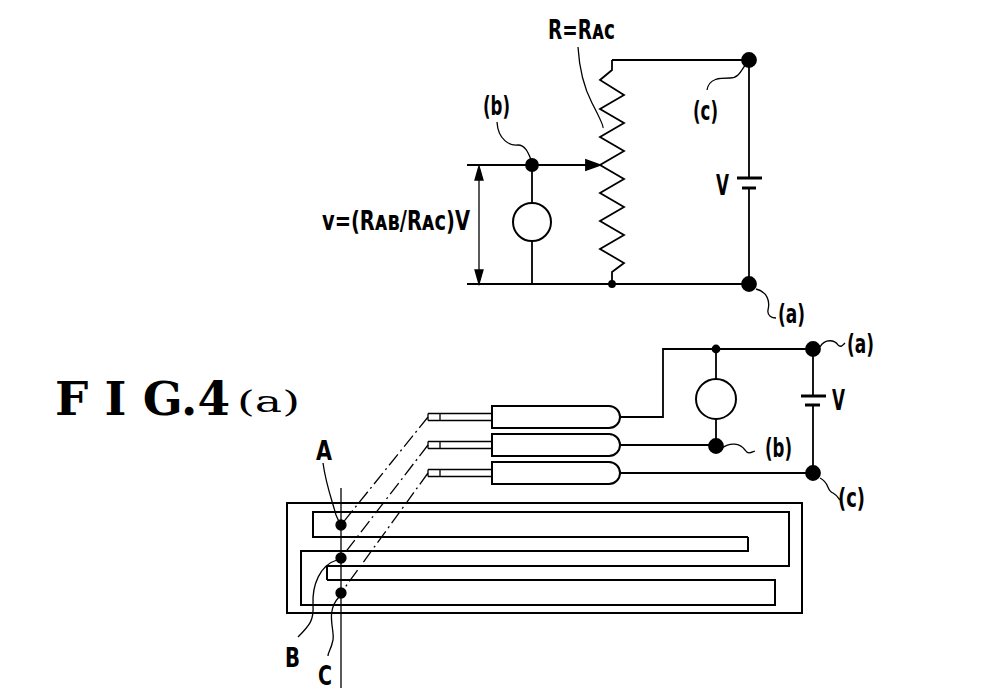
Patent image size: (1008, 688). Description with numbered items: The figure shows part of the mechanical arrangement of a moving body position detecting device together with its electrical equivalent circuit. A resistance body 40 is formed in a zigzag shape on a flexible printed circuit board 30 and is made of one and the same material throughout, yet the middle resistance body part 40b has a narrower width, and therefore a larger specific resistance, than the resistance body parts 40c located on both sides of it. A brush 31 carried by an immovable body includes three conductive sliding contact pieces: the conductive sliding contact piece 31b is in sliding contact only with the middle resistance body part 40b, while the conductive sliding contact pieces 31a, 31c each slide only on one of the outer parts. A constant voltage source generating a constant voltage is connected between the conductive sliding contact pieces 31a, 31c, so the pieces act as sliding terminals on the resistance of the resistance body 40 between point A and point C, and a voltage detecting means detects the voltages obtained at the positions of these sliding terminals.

The flexible printed circuit board 30 is at (803, 588).
The brush 31 is at (519, 406).
The conductive sliding contact piece 31a is at (510, 415).
The conductive sliding contact piece 31b is at (553, 438).
The conductive sliding contact piece 31c is at (593, 467).
The resistance body 40 is at (583, 591).
The middle resistance body part 40b is at (640, 557).
The resistance body part 40c is at (578, 523).